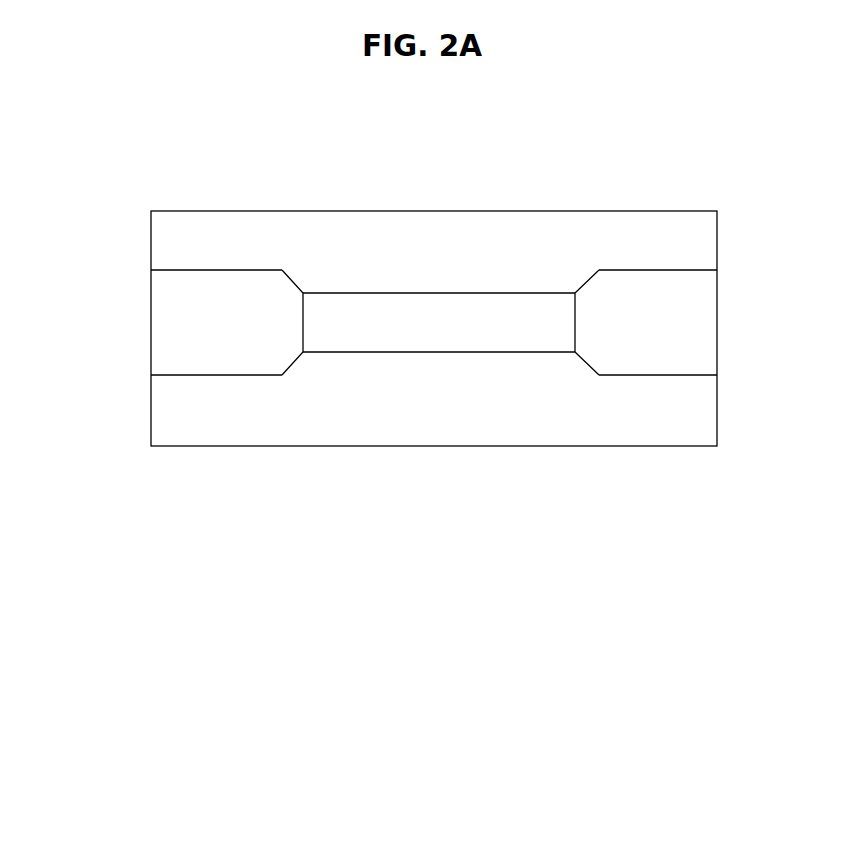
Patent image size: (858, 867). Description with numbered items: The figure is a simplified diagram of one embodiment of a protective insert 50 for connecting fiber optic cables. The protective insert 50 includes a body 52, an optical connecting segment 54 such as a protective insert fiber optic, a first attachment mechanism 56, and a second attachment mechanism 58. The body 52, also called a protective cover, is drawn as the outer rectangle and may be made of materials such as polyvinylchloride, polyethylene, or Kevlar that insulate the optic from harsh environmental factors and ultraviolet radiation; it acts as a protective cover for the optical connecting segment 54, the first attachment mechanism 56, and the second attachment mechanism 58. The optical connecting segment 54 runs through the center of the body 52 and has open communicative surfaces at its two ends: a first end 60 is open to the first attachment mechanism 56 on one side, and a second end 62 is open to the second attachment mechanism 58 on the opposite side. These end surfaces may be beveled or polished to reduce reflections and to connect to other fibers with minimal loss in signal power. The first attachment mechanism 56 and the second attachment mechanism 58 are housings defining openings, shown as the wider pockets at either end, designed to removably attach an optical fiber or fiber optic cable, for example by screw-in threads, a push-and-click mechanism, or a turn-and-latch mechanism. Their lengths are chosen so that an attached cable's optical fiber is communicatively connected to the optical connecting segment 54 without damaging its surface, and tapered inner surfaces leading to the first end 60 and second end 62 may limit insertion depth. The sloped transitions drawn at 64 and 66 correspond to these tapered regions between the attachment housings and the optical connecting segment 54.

The protective insert 50 is at (442, 434).
The body 52 is at (513, 210).
The optical connecting segment 54 is at (457, 357).
The first attachment mechanism 56 is at (672, 294).
The second attachment mechanism 58 is at (185, 303).
The first end 60 is at (578, 331).
The second end 62 is at (300, 328).
The second taper 64 is at (582, 370).
The first taper 66 is at (295, 282).